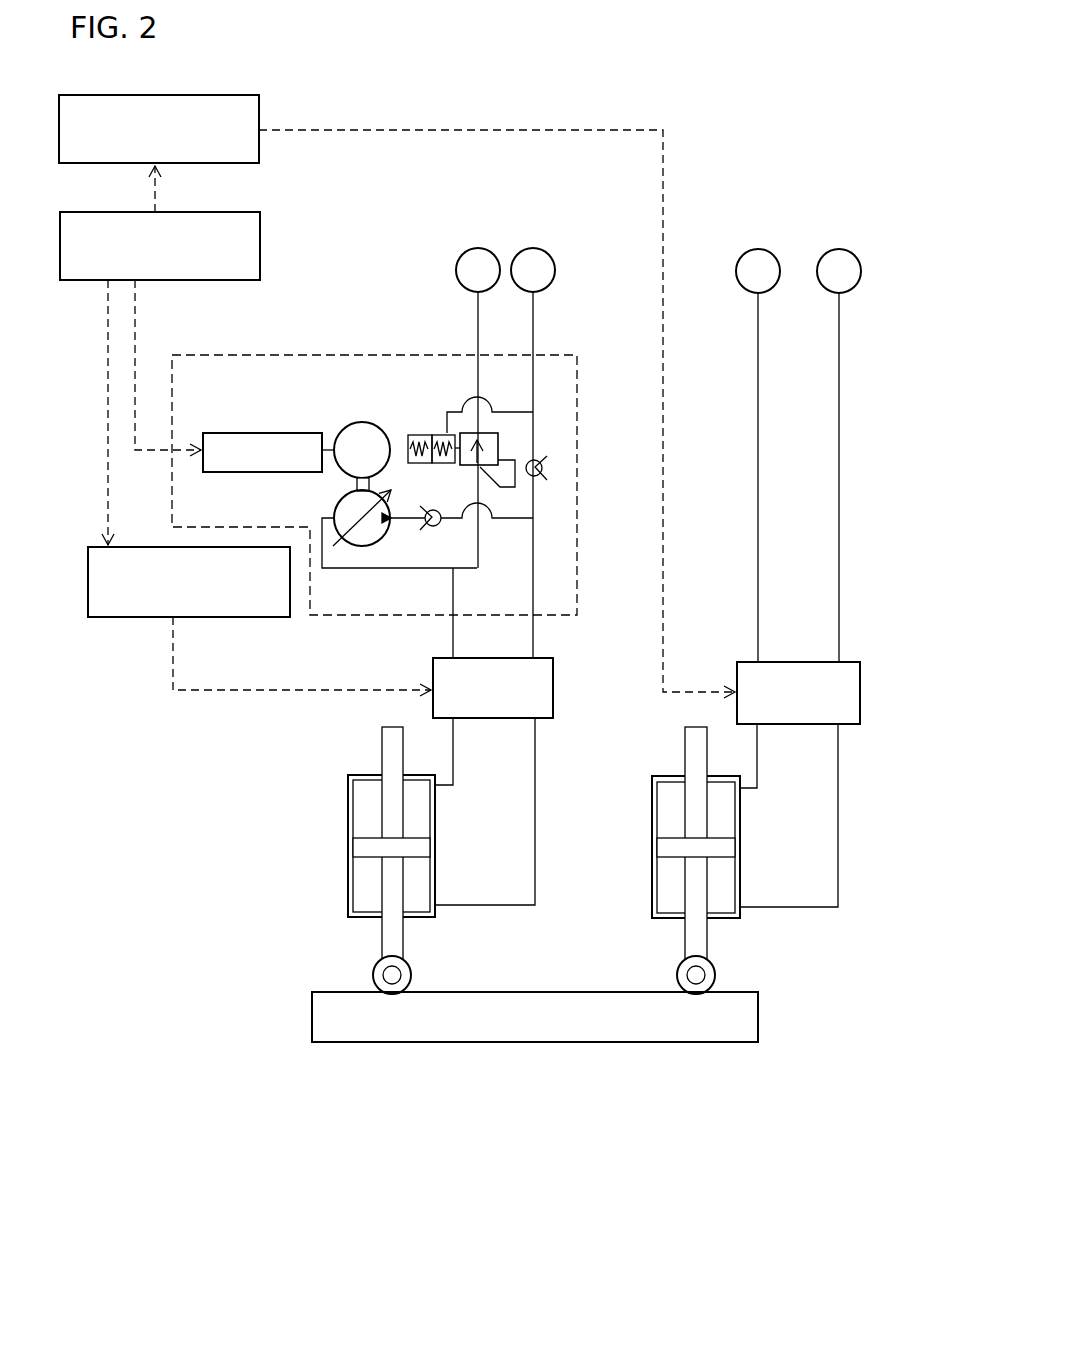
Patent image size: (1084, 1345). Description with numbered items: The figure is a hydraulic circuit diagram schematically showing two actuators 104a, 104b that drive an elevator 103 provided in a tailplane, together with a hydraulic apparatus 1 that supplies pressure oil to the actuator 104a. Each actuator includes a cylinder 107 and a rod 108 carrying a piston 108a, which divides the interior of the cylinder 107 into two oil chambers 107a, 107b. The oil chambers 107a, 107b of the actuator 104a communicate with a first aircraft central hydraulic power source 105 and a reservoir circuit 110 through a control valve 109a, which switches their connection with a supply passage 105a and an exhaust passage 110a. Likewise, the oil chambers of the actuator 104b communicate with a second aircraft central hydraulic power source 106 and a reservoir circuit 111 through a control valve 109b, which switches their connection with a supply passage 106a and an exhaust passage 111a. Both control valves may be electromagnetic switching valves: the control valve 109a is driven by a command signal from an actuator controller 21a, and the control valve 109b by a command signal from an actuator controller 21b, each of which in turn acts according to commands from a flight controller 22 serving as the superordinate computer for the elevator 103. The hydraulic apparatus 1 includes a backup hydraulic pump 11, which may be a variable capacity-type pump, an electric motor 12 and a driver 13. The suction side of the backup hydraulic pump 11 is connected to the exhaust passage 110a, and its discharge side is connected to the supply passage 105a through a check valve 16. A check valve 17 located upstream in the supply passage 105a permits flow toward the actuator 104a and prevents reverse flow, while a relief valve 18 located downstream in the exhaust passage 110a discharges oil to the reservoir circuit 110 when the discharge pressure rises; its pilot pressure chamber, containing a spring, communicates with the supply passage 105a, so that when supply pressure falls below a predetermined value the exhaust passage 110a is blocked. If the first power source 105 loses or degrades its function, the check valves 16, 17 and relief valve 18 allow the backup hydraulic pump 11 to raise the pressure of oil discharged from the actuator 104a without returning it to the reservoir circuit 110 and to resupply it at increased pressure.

The hydraulic apparatus 1 is at (338, 355).
The backup hydraulic pump 11 is at (335, 508).
The electric motor 12 is at (362, 422).
The driver 13 is at (292, 433).
The check valve 16 is at (420, 535).
The check valve 17 is at (548, 459).
The relief valve 18 is at (430, 406).
The actuator controller 21a is at (150, 617).
The actuator controller 21b is at (260, 105).
The flight controller 22 is at (260, 232).
The elevator 103 is at (522, 1025).
The actuator 104a is at (407, 883).
The actuator 104b is at (752, 935).
The first aircraft central hydraulic power source 105 is at (536, 248).
The supply passage 105a is at (534, 316).
The second aircraft central hydraulic power source 106 is at (839, 249).
The supply passage 106a is at (839, 431).
The cylinder 107 is at (350, 822).
The oil chamber 107a is at (366, 798).
The oil chamber 107b is at (367, 888).
The rod 108 is at (408, 935).
The piston 108a is at (368, 847).
The control valve 109a is at (553, 665).
The control valve 109b is at (860, 670).
The reservoir circuit 110 is at (478, 248).
The exhaust passage 110a is at (478, 305).
The reservoir circuit 111 is at (758, 249).
The exhaust passage 111a is at (758, 440).